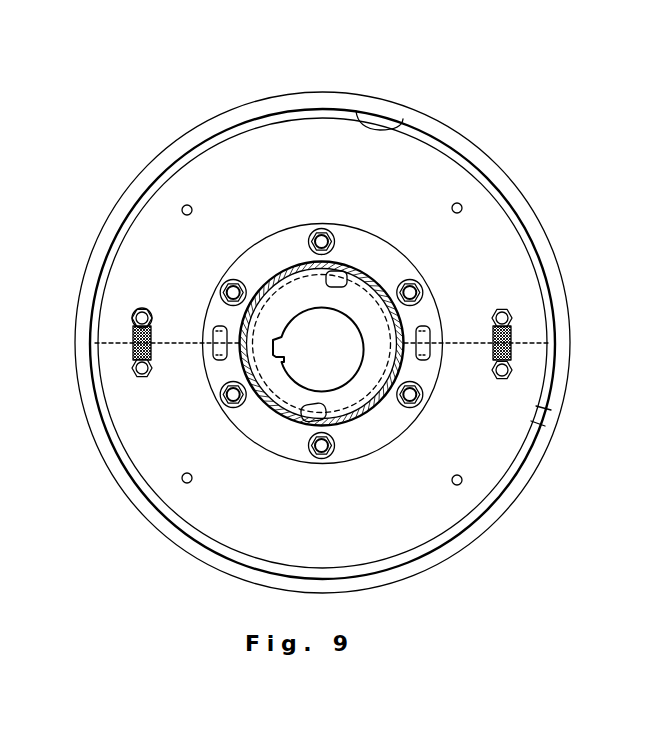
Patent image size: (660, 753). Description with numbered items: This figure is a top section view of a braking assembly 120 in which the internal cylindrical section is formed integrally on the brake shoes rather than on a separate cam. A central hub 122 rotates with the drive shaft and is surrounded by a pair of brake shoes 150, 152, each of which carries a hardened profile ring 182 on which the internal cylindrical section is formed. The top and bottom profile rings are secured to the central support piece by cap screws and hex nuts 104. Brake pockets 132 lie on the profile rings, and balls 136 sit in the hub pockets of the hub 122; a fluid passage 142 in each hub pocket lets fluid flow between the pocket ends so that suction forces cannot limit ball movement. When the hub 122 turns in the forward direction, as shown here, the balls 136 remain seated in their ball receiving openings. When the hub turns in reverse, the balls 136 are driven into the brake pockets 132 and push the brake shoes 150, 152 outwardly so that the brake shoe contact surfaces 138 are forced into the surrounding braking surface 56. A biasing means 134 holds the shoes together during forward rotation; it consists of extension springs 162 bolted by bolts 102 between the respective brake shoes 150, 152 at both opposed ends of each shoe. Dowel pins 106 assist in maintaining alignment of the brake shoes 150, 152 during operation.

The braking assembly 120 is at (146, 132).
The brake shoe contact surfaces 138 is at (490, 177).
The brake shoe 150 is at (538, 272).
The brake shoe 152 is at (541, 404).
The braking surface 56 is at (400, 122).
The biasing means 134 is at (118, 338).
The hub 122 is at (402, 258).
The cap screws and hex nuts 104 is at (337, 458).
The hardened profile ring 182 is at (222, 285).
The dowel pins 106 is at (445, 335).
The brake pockets 132 is at (383, 280).
The fluid passage 142 is at (297, 285).
The balls 136 is at (302, 413).
The bolts 102 is at (135, 372).
The extension springs 162 is at (130, 340).